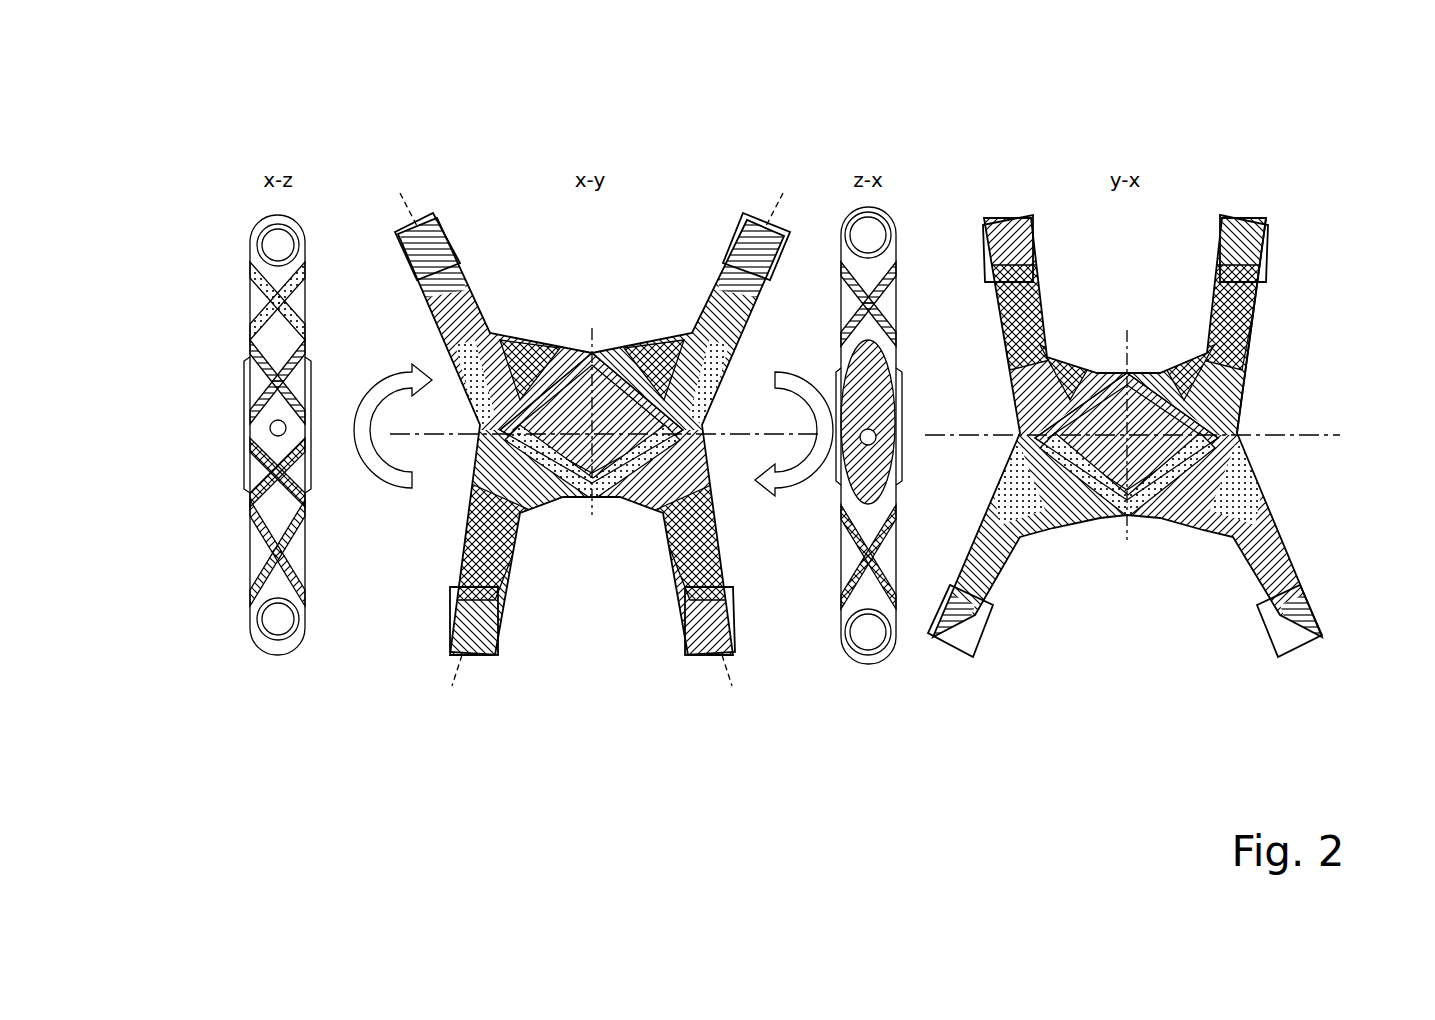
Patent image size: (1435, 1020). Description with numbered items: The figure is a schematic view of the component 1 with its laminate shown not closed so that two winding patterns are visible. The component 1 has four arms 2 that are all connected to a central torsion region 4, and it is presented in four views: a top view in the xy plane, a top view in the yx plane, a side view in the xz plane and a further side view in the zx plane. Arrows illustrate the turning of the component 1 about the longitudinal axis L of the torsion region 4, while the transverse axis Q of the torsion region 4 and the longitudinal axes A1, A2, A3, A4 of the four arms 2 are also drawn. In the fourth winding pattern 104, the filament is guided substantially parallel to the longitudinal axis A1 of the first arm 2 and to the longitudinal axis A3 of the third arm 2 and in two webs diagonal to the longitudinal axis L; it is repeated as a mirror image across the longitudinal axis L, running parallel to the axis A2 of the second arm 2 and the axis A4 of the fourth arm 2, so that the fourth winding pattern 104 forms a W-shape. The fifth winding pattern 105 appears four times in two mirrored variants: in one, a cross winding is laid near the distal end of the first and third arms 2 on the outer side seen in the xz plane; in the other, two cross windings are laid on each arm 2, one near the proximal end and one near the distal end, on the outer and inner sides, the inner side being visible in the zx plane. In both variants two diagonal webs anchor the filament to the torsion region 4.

The component 1 is at (308, 203).
The arm 2 is at (1045, 295).
The torsion region 4 is at (1237, 360).
The longitudinal axis L is at (1262, 436).
The transverse axis Q is at (595, 330).
The fourth winding pattern 104 is at (527, 332).
The fifth winding pattern 105 is at (248, 275).
The longitudinal axis of the first arm A1 is at (407, 207).
The longitudinal axis of the second arm A2 is at (730, 690).
The longitudinal axis of the third arm A3 is at (777, 203).
The longitudinal axis of the fourth arm A4 is at (453, 690).